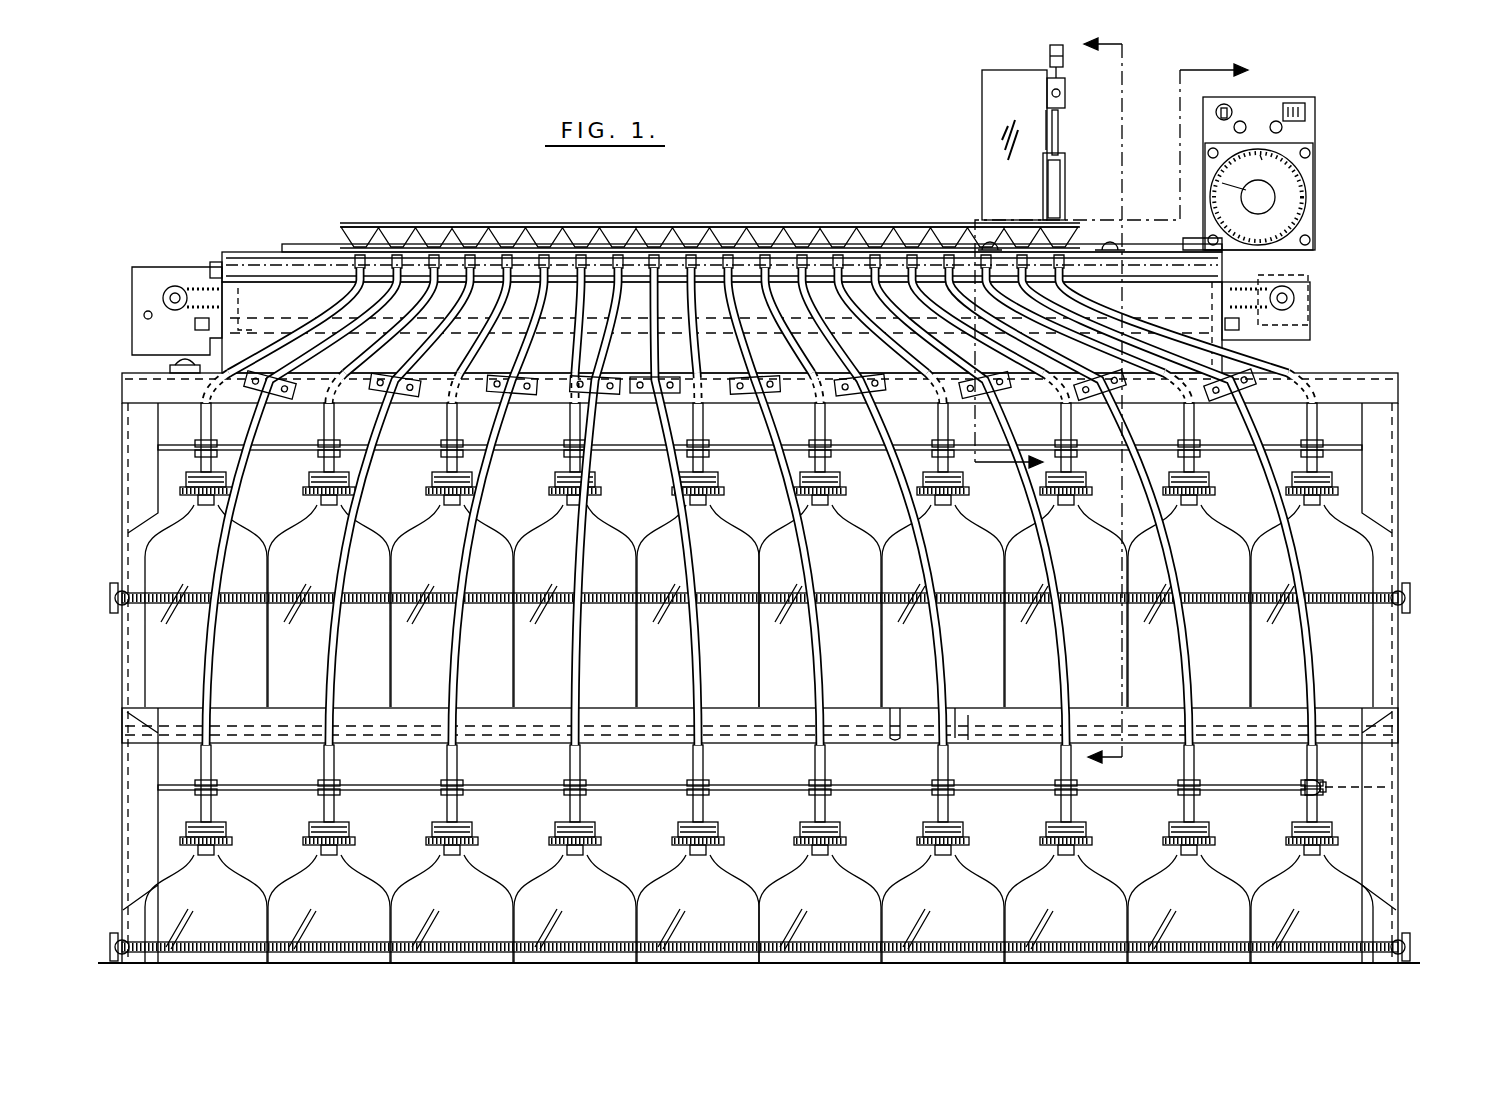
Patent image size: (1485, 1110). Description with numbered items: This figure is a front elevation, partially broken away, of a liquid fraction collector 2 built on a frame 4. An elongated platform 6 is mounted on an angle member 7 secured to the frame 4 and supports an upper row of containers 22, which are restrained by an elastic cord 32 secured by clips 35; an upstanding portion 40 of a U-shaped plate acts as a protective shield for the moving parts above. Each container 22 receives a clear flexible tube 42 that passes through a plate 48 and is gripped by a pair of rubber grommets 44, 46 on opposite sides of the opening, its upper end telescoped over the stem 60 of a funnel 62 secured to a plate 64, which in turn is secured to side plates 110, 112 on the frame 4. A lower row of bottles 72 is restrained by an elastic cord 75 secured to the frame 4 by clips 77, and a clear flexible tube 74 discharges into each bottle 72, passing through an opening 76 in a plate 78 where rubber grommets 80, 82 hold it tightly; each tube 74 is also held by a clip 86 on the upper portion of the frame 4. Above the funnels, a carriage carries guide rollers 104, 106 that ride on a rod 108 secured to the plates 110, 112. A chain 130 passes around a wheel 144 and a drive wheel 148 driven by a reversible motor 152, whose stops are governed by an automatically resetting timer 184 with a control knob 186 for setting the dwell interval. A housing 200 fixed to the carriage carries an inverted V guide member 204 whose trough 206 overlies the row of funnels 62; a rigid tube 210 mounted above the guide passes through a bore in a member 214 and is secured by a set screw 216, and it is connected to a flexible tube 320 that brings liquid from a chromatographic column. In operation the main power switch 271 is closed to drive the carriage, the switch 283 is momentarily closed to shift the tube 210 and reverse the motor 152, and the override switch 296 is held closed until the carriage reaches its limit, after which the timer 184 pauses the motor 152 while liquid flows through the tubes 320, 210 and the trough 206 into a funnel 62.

The liquid fraction collector 2 is at (1394, 240).
The frame 4 is at (110, 722).
The elongated platform 6 is at (900, 730).
The angle member 7 is at (967, 730).
The row of containers 22 is at (793, 555).
The elastic cord 32 is at (215, 605).
The clip 35 is at (114, 601).
The upstanding portion 40 is at (722, 327).
The clear flexible tube 42 is at (657, 252).
The rubber grommet 44 is at (450, 444).
The rubber grommet 46 is at (441, 458).
The plate 48 is at (779, 446).
The stem 60 is at (723, 221).
The funnel 62 is at (560, 233).
The plate 64 is at (302, 244).
The row of bottles 72 is at (295, 885).
The clear flexible tube 74 is at (742, 262).
The elastic cord 75 is at (928, 958).
The opening 76 is at (1306, 793).
The clip 77 is at (114, 947).
The plate 78 is at (774, 786).
The rubber grommet 80 is at (1318, 786).
The rubber grommet 82 is at (1326, 793).
The clip 86 is at (532, 384).
The guide roller 104 is at (1122, 250).
The guide roller 106 is at (988, 240).
The rod 108 is at (265, 257).
The plate 110 is at (1172, 368).
The plate 112 is at (253, 305).
The chain 130 is at (215, 262).
The wheel 144 is at (176, 286).
The drive wheel 148 is at (1299, 307).
The reversible motor 152 is at (1294, 298).
The automatically resetting timer 184 is at (1280, 156).
The control knob 186 is at (1266, 196).
The housing 200 is at (1020, 131).
The inverted V guide member 204 is at (1075, 175).
The trough 206 is at (1066, 190).
The rigid tube 210 is at (1059, 132).
The member 214 is at (1066, 85).
The set screw 216 is at (1050, 94).
The main power switch 271 is at (1223, 104).
The switch 283 is at (1246, 123).
The override switch 296 is at (1283, 127).
The flexible tube 320 is at (1050, 55).